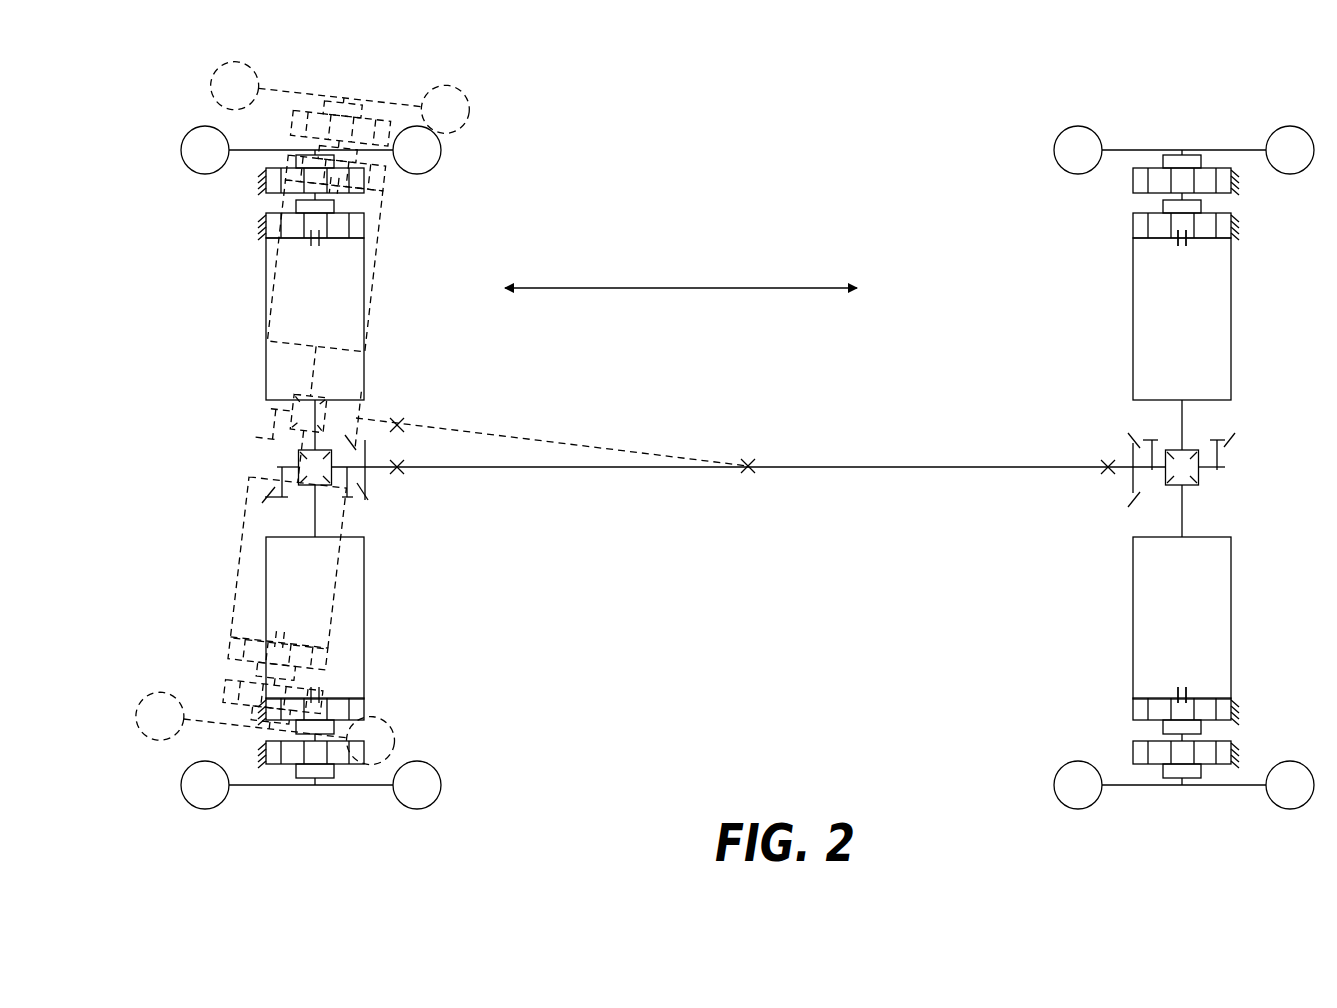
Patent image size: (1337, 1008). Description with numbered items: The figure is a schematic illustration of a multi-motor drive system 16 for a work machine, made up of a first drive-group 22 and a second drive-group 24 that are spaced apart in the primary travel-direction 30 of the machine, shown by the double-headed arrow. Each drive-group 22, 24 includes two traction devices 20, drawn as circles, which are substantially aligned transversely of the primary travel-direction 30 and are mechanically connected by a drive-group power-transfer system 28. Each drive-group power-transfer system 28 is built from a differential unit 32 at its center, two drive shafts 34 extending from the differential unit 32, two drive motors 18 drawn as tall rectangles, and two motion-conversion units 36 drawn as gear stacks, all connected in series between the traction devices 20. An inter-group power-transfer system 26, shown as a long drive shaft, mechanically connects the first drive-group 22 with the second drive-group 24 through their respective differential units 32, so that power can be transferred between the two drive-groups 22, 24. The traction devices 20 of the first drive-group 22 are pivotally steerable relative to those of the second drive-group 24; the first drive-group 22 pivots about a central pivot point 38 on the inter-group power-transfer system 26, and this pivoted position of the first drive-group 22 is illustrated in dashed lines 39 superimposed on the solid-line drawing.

The drive system 16 is at (924, 192).
The drive motor 18 is at (265, 263).
The traction device 20 is at (237, 152).
The first drive-group 22 is at (487, 91).
The second drive-group 24 is at (1114, 89).
The inter-group power-transfer system 26 is at (822, 468).
The drive-group power-transfer system 28 is at (252, 429).
The primary travel-direction 30 is at (628, 287).
The differential unit 32 is at (347, 472).
The drive shaft 34 is at (316, 440).
The motion-conversion unit 36 is at (358, 229).
The central pivot point 38 is at (749, 462).
The dashed lines 39 is at (375, 264).